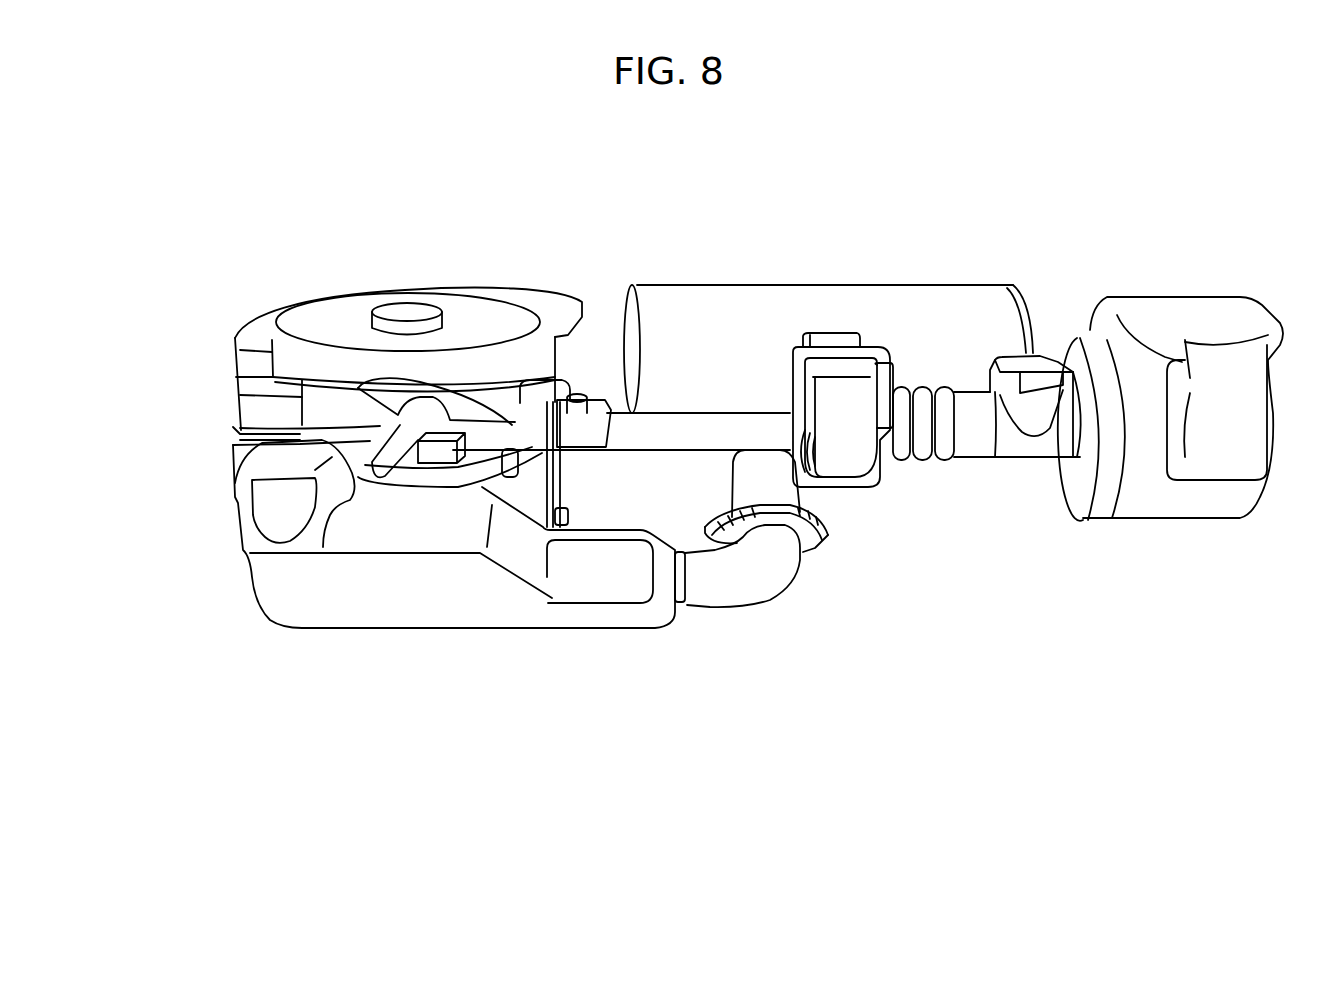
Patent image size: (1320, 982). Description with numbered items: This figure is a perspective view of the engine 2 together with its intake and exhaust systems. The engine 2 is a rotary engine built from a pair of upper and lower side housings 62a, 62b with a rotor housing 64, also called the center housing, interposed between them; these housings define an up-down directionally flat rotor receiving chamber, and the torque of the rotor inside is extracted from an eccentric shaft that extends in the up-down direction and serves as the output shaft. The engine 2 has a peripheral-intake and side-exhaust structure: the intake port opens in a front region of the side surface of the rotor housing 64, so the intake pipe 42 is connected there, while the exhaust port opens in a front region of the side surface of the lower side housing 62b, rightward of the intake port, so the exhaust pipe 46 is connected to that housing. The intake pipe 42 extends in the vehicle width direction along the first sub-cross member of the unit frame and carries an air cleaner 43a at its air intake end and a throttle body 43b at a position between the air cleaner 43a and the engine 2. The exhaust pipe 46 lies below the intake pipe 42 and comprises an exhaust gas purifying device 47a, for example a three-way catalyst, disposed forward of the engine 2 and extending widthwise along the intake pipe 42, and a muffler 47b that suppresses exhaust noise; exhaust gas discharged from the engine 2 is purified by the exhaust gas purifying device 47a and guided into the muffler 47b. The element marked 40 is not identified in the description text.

The engine 2 is at (469, 236).
The motor unit 40 is at (345, 318).
The intake pipe 42 is at (672, 450).
The air cleaner 43a is at (1215, 507).
The throttle body 43b is at (848, 470).
The exhaust pipe 46 is at (742, 622).
The exhaust gas purifying device 47a is at (425, 612).
The muffler 47b is at (895, 305).
The upper side housing 62a is at (233, 350).
The lower side housing 62b is at (233, 440).
The rotor housing 64 is at (235, 395).